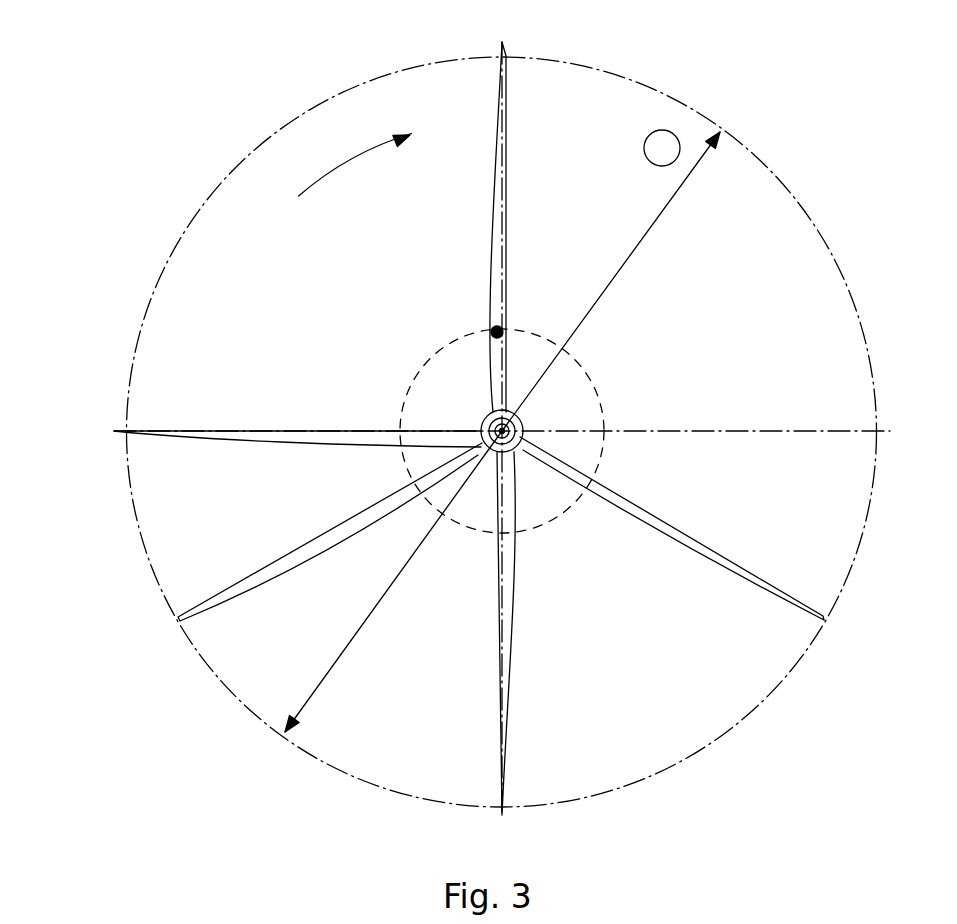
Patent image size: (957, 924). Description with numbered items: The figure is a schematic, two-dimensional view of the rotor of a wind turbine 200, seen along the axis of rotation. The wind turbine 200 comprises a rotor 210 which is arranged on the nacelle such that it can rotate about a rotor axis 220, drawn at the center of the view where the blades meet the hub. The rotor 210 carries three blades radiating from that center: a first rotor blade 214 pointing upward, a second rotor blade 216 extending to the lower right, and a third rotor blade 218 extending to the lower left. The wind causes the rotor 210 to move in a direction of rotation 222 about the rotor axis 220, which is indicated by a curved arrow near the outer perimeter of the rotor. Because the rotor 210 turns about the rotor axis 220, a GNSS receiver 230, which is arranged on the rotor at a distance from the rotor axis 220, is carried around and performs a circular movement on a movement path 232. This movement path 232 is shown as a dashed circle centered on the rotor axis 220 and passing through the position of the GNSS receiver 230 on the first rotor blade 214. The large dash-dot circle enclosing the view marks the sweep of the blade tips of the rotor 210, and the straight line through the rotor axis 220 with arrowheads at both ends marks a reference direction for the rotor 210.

The wind turbine 200 is at (177, 147).
The direction of rotation 222 is at (337, 167).
The first rotor blade 214 is at (508, 148).
The rotor 210 is at (668, 258).
The GNSS receiver 230 is at (497, 332).
The movement path 232 is at (405, 403).
The rotor axis 220 is at (523, 430).
The second rotor blade 216 is at (655, 500).
The third rotor blade 218 is at (245, 577).